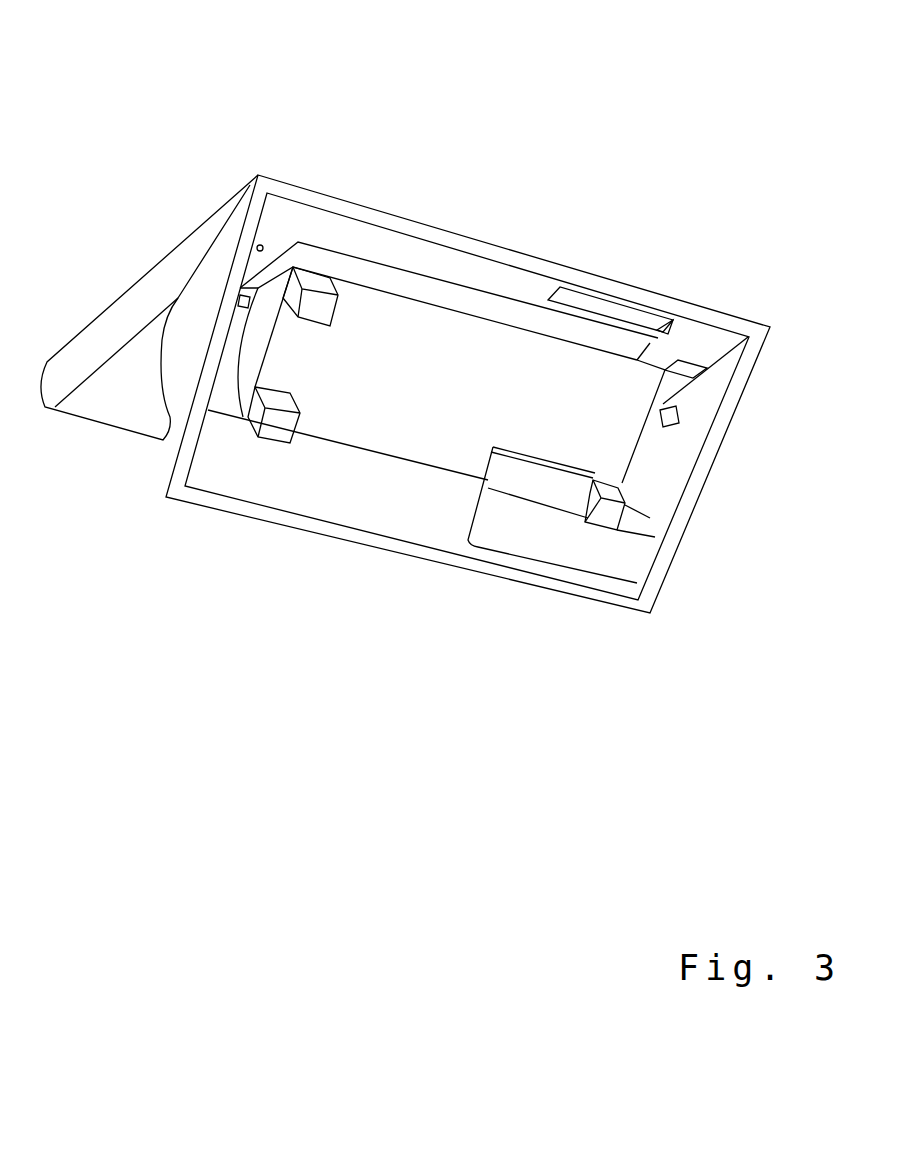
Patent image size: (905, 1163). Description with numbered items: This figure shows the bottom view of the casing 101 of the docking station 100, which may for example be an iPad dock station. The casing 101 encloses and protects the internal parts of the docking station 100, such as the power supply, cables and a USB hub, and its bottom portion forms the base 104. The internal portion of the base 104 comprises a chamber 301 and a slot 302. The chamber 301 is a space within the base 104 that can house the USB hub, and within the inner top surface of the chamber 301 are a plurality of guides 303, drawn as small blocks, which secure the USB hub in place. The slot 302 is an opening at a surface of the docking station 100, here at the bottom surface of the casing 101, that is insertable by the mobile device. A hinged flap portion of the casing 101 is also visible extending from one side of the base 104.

The docking station 100 is at (474, 312).
The casing 101 is at (149, 280).
The base 104 is at (460, 333).
The chamber 301 is at (478, 372).
The slot 302 is at (648, 392).
The guides 303 is at (436, 311).